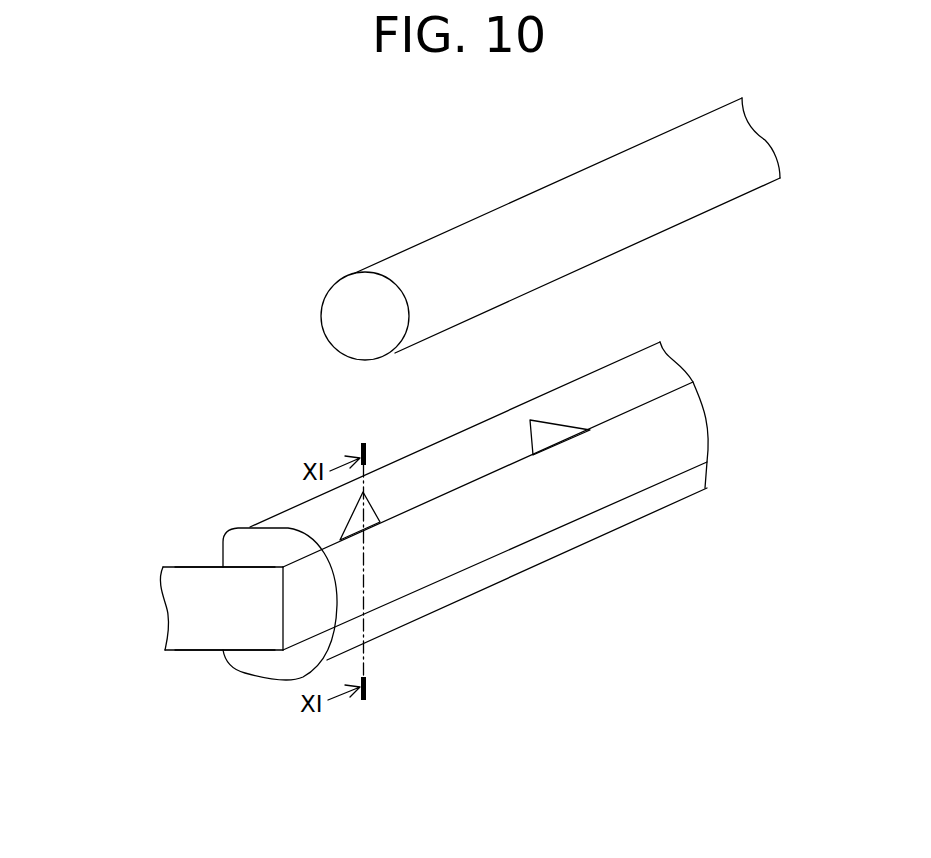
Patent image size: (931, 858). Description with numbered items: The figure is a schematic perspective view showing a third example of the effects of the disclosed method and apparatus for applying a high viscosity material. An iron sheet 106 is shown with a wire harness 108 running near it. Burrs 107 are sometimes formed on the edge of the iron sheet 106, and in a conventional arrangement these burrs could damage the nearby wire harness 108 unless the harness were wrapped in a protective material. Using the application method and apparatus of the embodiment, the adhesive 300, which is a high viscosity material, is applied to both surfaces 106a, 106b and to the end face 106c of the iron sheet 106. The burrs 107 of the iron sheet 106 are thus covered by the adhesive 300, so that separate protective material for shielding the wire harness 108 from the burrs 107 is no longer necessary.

The wire harness 108 is at (597, 185).
The adhesive 300 is at (293, 507).
The burrs 107 is at (540, 438).
The iron sheet 106 is at (212, 605).
The surface of iron sheet 106a is at (200, 565).
The surface of iron sheet 106b is at (203, 652).
The end face of iron sheet 106c is at (296, 606).